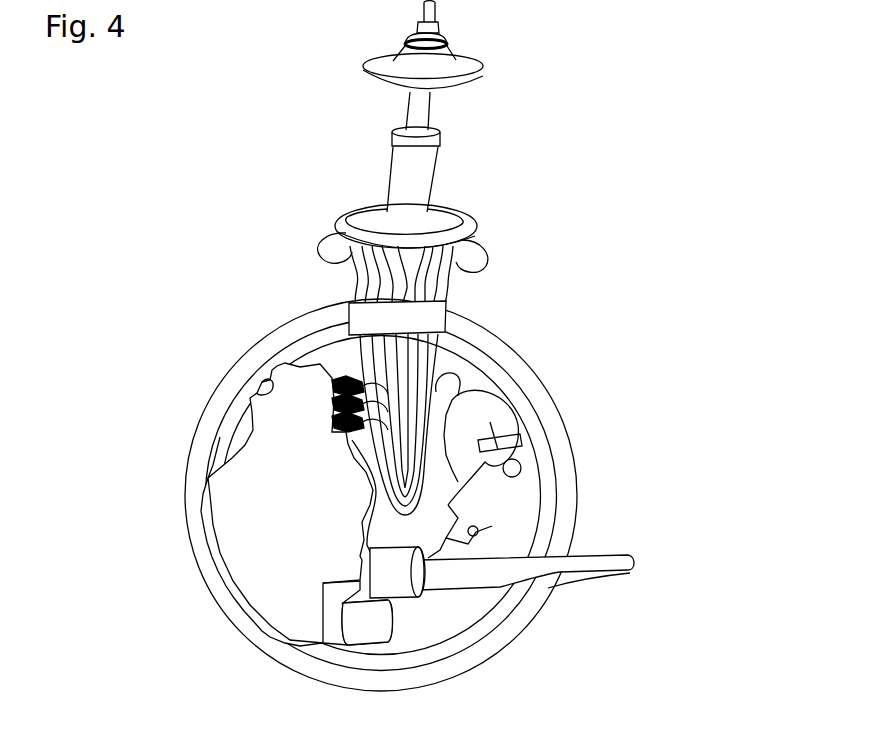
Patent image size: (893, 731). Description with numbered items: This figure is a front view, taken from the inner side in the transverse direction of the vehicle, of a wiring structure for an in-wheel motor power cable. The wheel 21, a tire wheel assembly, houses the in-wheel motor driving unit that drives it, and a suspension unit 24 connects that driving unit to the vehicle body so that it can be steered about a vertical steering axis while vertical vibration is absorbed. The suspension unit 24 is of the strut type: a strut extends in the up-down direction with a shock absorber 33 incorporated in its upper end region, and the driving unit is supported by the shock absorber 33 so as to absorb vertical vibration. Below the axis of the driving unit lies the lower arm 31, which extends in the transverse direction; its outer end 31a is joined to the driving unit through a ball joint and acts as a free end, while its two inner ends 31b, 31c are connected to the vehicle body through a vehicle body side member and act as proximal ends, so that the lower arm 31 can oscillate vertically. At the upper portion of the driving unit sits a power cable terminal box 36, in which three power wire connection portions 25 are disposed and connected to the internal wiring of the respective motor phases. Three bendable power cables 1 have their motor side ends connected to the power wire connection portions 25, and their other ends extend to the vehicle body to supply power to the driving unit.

The power cable 1 is at (430, 450).
The wheel 21 is at (236, 345).
The suspension unit 24 is at (440, 594).
The power wire connection portion 25 is at (332, 386).
The lower arm 31 is at (443, 611).
The outer end 31a is at (357, 625).
The inner end 31b is at (385, 570).
The inner end 31c is at (632, 556).
The shock absorber 33 is at (420, 177).
The power cable terminal box 36 is at (330, 372).
The wheel house W is at (275, 323).